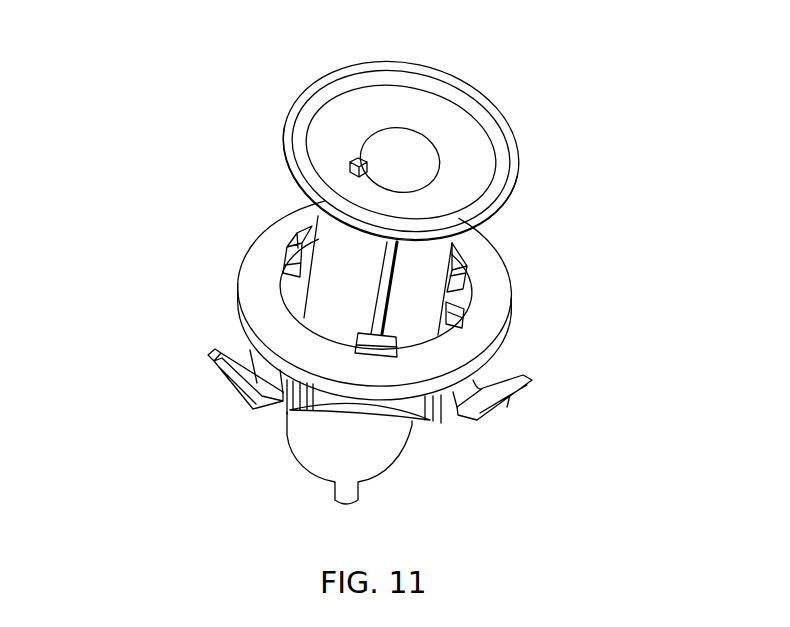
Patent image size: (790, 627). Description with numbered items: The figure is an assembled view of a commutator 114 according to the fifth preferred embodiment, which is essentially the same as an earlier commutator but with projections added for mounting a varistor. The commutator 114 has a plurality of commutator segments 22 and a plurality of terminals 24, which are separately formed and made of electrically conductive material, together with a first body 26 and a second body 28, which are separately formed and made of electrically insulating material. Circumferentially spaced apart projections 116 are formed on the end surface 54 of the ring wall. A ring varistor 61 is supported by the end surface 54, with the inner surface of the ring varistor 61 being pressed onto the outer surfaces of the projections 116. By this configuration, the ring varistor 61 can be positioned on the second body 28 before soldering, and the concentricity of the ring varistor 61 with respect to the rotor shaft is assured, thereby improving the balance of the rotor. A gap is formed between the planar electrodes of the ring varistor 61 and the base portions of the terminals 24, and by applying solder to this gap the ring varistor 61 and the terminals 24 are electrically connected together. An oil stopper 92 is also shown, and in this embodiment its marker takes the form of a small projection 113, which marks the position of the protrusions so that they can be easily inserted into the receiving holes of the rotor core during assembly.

The commutator 114 is at (139, 55).
The projection 113 is at (357, 160).
The oil stopper 92 is at (448, 138).
The commutator segment 22 is at (330, 263).
The projections 116 is at (293, 243).
The end surface 54 is at (452, 307).
The ring varistor 61 is at (267, 305).
The first body 26 is at (380, 294).
The terminals 24 is at (227, 370).
The second body 28 is at (315, 443).